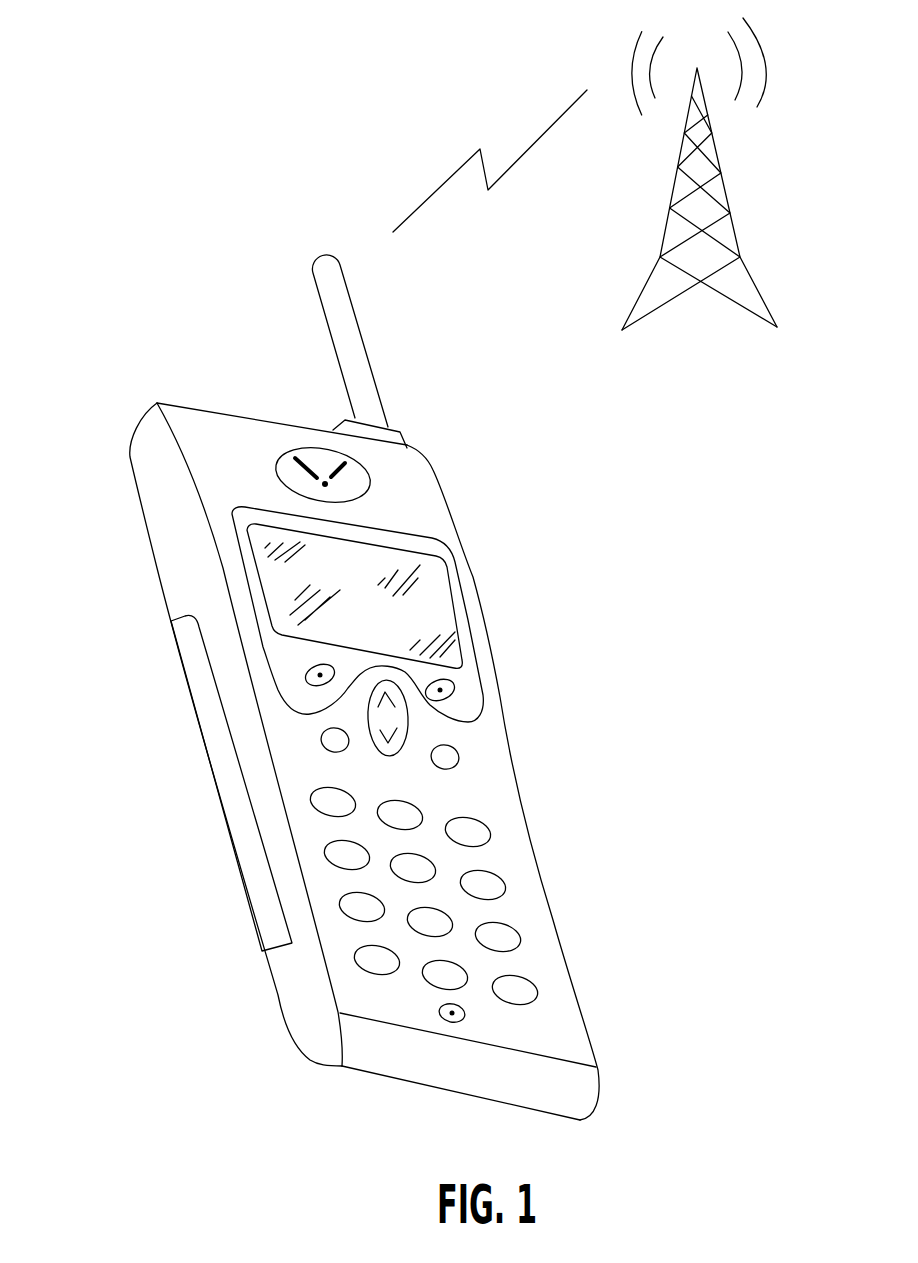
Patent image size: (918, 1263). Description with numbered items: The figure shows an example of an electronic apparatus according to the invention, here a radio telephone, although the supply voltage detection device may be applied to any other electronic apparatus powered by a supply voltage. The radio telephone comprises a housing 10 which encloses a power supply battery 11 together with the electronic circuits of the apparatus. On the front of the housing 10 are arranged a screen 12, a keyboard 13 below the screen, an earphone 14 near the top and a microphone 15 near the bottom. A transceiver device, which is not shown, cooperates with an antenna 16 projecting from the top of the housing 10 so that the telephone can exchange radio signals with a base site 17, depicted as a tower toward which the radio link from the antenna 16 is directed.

The housing 10 is at (156, 383).
The power supply battery 11 is at (229, 782).
The screen 12 is at (428, 613).
The keyboard 13 is at (490, 803).
The earphone 14 is at (313, 442).
The microphone 15 is at (407, 1005).
The antenna 16 is at (363, 297).
The base site 17 is at (752, 167).